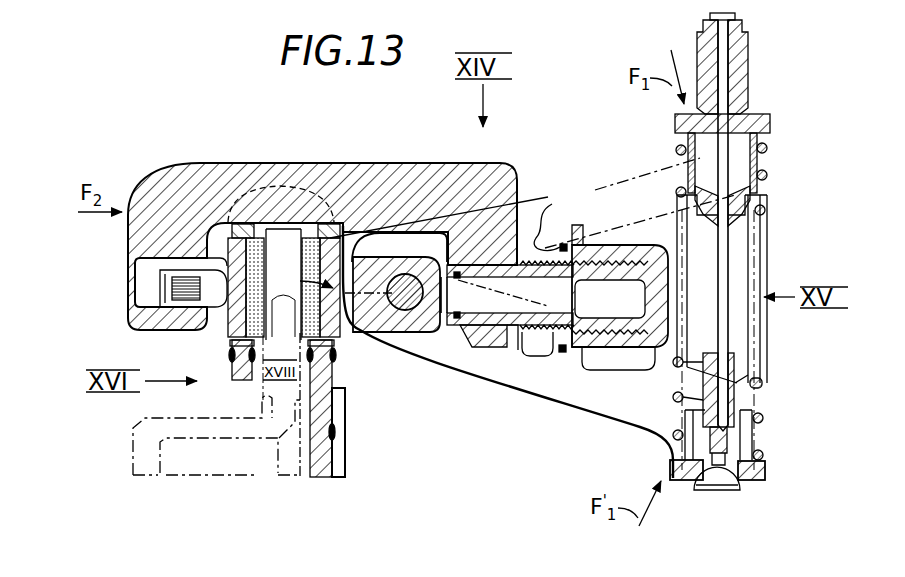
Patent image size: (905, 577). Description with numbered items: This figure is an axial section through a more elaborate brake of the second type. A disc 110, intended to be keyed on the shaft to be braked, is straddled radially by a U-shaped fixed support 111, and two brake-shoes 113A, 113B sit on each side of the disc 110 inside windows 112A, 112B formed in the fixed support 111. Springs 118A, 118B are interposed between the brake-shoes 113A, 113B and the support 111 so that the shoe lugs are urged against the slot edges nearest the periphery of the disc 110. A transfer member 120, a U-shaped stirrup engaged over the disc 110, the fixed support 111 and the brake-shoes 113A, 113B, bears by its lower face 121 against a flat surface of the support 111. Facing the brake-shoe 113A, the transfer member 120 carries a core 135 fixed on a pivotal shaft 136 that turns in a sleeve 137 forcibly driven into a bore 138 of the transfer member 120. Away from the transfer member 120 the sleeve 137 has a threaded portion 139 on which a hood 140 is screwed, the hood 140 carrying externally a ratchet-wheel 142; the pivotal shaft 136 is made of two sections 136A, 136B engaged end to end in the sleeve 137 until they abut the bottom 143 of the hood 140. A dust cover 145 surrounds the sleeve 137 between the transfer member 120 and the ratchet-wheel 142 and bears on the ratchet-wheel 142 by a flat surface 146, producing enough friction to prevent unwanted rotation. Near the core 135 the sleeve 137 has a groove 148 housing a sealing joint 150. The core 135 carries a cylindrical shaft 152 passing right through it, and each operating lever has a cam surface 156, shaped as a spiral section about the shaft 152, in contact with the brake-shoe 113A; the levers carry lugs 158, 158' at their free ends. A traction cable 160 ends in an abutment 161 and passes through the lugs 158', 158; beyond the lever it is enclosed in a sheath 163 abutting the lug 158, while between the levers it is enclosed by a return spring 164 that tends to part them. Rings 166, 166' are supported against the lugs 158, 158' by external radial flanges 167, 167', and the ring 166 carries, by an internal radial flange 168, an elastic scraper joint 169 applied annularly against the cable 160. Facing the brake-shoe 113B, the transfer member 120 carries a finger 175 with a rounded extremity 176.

The disc 110 is at (289, 221).
The fixed support 111 is at (326, 484).
The window 112A is at (334, 241).
The window 112B is at (249, 238).
The brake-shoe 113A is at (348, 230).
The brake-shoe 113B is at (229, 244).
The spring 118A is at (336, 404).
The spring 118B is at (230, 352).
The transfer member 120 is at (158, 175).
The lower face 121 is at (286, 314).
The core 135 is at (404, 346).
The pivotal shaft 136 is at (489, 333).
The section of pivotal shaft 136A is at (536, 350).
The section of pivotal shaft 136B is at (630, 311).
The sleeve 137 is at (528, 352).
The bore 138 is at (471, 349).
The threaded portion 139 is at (596, 346).
The hood 140 is at (656, 353).
The ratchet-wheel 142 is at (585, 348).
The bottom of hood 143 is at (728, 321).
The dust cover 145 is at (617, 204).
The flat surface 146 is at (399, 247).
The groove 148 is at (583, 240).
The sealing joint 150 is at (412, 334).
The cylindrical shaft 152 is at (467, 292).
The cam surface 156 is at (362, 360).
The lug 158 is at (746, 101).
The lug 158' is at (750, 485).
The traction cable 160 is at (750, 351).
The abutment 161 is at (719, 490).
The sheath 163 is at (740, 95).
The return spring 164 is at (770, 150).
The ring 166 is at (754, 183).
The ring 166' is at (749, 427).
The radial flange 167 is at (755, 150).
The radial flange 167' is at (789, 452).
The radial extremity flange 168 is at (750, 200).
The elastic scraper joint 169 is at (726, 218).
The finger 175 is at (190, 304).
The rounded extremity 176 is at (166, 264).